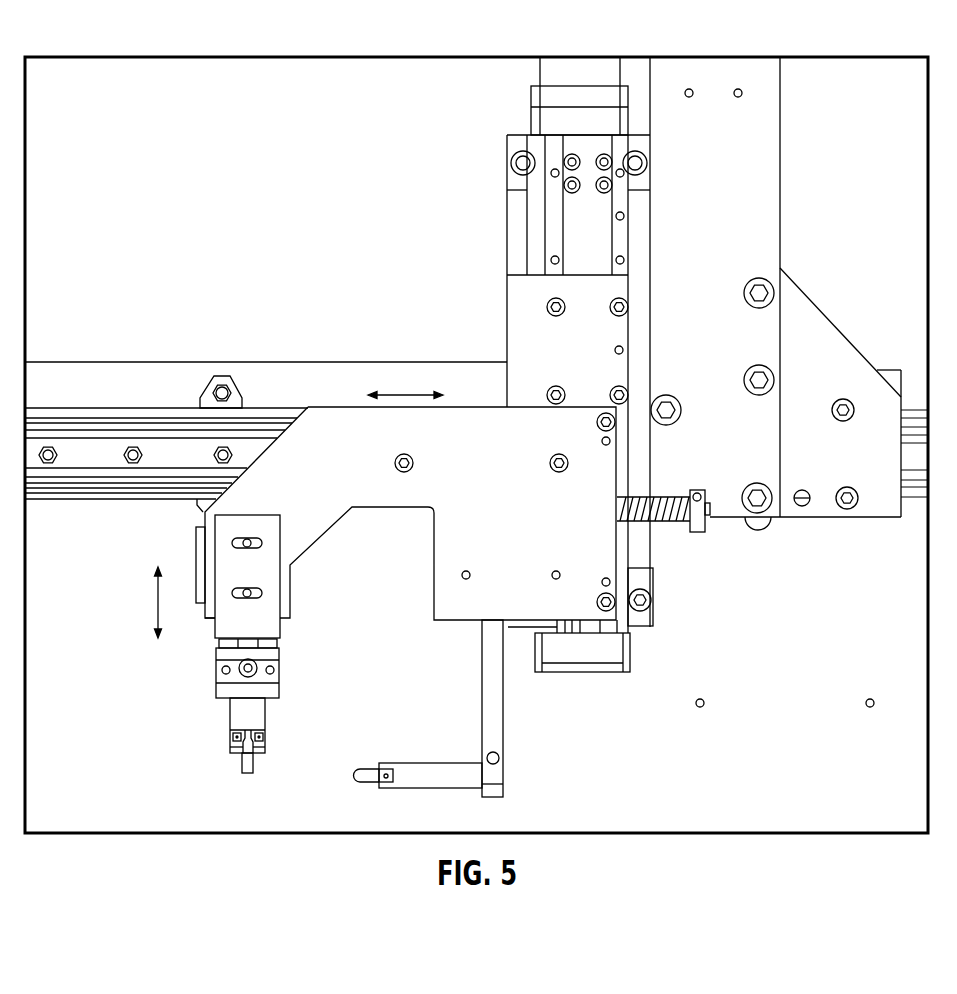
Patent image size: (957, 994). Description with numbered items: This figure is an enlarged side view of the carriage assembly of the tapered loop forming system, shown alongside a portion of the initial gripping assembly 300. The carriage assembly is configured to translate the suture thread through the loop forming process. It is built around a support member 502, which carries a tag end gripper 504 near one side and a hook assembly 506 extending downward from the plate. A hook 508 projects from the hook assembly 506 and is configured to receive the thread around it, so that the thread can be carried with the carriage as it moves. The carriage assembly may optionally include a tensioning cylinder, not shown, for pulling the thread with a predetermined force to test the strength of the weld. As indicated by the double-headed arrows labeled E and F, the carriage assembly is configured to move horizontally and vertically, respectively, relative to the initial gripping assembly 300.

The initial gripping assembly 300 is at (388, 302).
The support member 502 is at (513, 491).
The tag end gripper 504 is at (218, 711).
The hook assembly 506 is at (525, 756).
The hook 508 is at (352, 776).